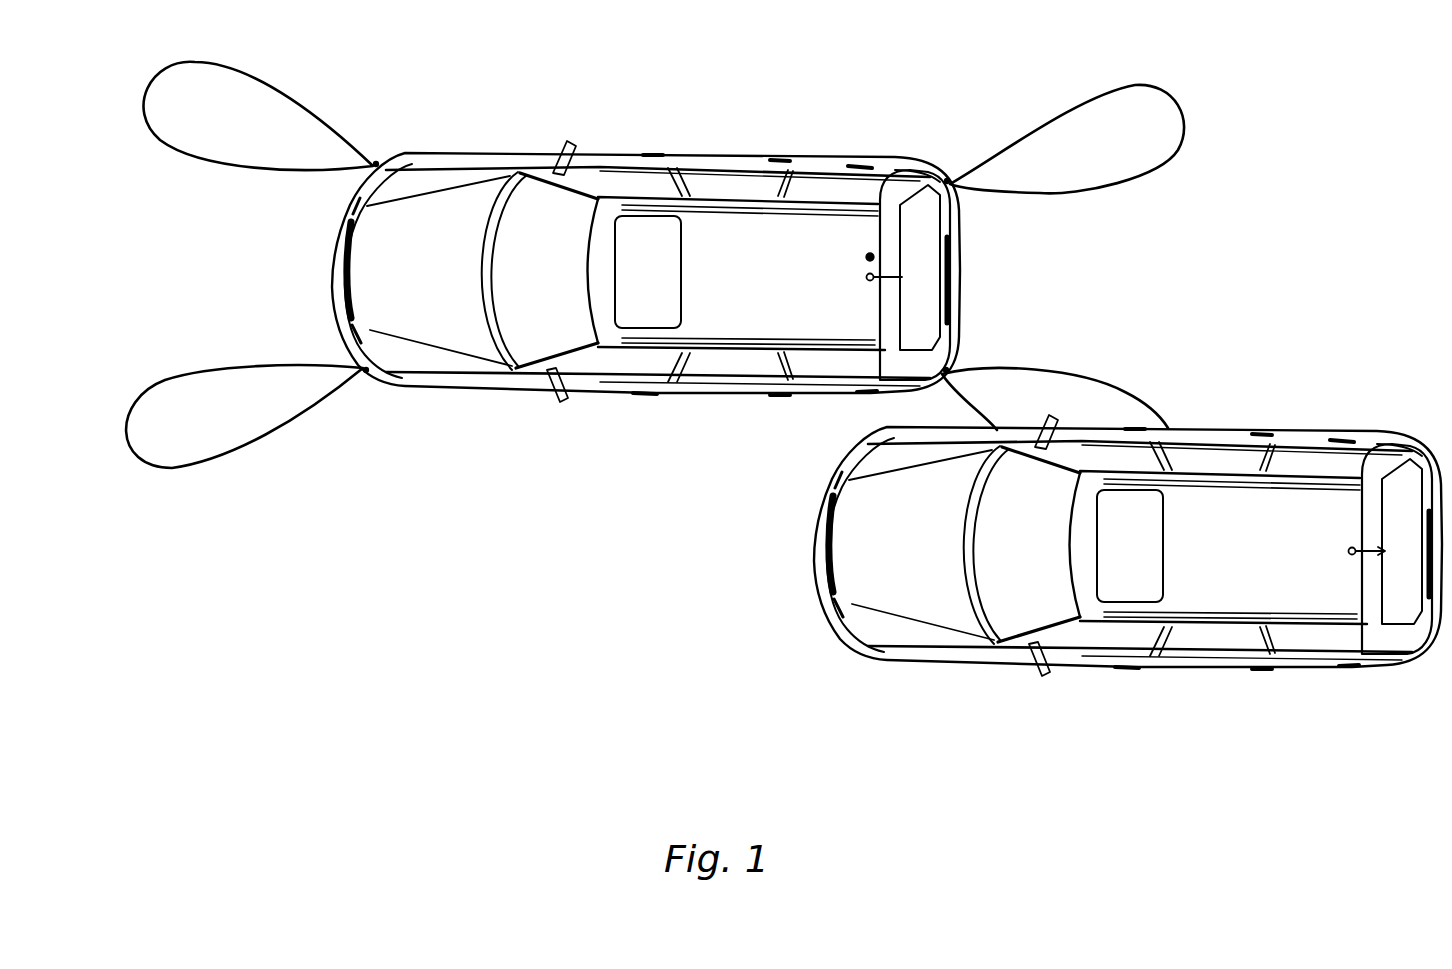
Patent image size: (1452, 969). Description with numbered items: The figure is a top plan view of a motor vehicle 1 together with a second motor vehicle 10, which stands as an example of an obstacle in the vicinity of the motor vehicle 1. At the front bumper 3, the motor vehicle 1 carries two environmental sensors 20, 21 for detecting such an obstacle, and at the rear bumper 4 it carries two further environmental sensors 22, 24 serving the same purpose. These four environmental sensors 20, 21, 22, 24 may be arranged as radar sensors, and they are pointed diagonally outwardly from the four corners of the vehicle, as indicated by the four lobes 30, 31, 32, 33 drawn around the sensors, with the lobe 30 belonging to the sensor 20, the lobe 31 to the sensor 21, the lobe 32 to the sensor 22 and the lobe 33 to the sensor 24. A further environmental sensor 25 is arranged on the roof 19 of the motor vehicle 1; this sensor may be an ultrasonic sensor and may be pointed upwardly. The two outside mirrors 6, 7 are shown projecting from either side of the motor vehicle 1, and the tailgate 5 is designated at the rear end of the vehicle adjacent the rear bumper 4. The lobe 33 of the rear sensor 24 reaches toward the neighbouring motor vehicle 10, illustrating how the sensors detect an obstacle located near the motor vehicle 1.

The motor vehicle 1 is at (718, 150).
The front bumper 3 is at (328, 256).
The rear bumper 4 is at (965, 276).
The tailgate 5 is at (920, 173).
The outside mirror 6 is at (565, 145).
The outside mirror 7 is at (552, 402).
The motor vehicle 10 is at (893, 662).
The roof 19 is at (700, 316).
The environmental sensor 20 is at (373, 163).
The environmental sensor 21 is at (364, 372).
The environmental sensor 22 is at (947, 177).
The environmental sensor 24 is at (953, 363).
The environmental sensor 25 is at (870, 252).
The lobe 30 is at (260, 88).
The lobe 31 is at (200, 377).
The lobe 32 is at (1157, 97).
The lobe 33 is at (1128, 387).